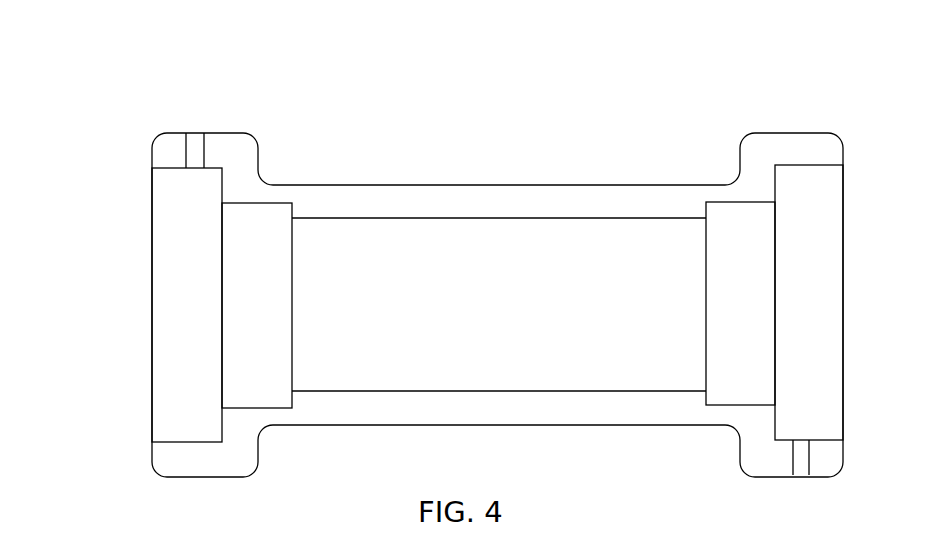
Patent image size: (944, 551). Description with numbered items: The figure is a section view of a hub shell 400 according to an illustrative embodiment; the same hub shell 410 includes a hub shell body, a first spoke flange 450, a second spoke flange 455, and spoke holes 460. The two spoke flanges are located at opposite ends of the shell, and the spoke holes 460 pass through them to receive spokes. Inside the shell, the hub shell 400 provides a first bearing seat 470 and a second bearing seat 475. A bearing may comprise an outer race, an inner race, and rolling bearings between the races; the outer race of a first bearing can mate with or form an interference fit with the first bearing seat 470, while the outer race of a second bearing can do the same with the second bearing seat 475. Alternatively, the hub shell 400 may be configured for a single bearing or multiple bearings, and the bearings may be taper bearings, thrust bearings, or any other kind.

The hub shell 400 is at (156, 71).
The hub shell 410 is at (498, 202).
The first spoke flange 450 is at (222, 143).
The second spoke flange 455 is at (775, 148).
The spoke holes 460 is at (196, 150).
The first bearing seat 470 is at (257, 332).
The second bearing seat 475 is at (741, 330).